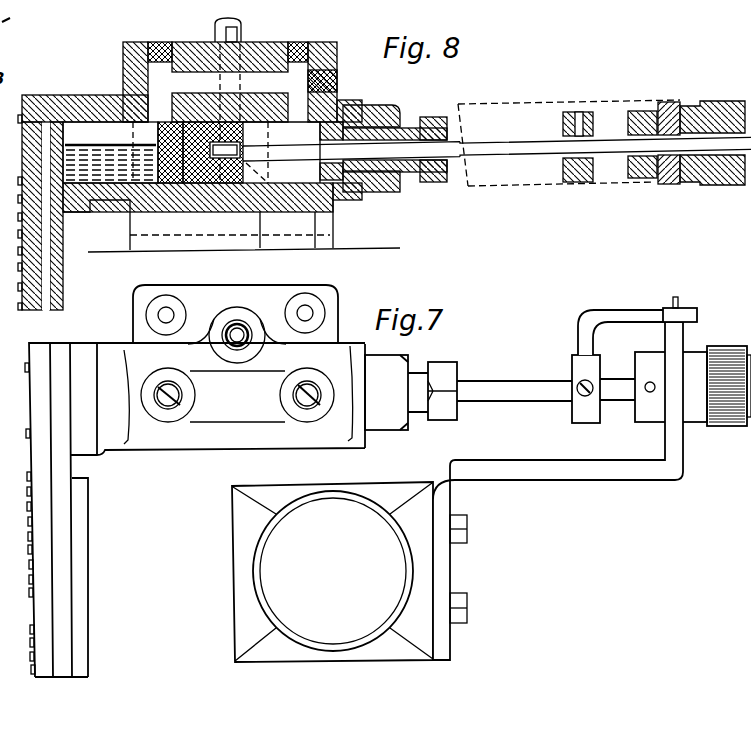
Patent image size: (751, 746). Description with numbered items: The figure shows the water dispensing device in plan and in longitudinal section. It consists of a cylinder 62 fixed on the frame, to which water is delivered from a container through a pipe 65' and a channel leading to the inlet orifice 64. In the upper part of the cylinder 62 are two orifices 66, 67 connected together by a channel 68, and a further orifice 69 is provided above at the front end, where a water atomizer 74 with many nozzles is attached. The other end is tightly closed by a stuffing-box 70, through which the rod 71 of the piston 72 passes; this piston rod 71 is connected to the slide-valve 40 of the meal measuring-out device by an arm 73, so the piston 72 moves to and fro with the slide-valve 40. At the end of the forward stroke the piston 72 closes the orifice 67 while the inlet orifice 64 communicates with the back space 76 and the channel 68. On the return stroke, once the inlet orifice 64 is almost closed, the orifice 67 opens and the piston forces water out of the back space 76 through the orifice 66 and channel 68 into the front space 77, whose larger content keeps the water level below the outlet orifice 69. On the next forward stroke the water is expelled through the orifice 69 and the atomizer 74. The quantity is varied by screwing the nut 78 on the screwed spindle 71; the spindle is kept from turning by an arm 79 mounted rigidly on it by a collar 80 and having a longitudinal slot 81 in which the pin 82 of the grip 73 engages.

In FIG. 7, the slide-valve 40 is at (238, 542).
In FIG. 8, the cylinder 62 is at (333, 205).
In FIG. 8, the inlet orifice 64 is at (261, 176).
In FIG. 8, the pipe 65' is at (248, 29).
In FIG. 8, the orifice 66 is at (306, 104).
In FIG. 8, the orifice 67 is at (158, 100).
In FIG. 8, the channel 68 is at (248, 82).
In FIG. 8, the orifice 69 is at (52, 132).
In FIG. 8, the stuffing-box 70 is at (392, 112).
In FIG. 8, the piston rod 71 is at (462, 155).
In FIG. 7, the piston rod 71 is at (510, 396).
In FIG. 8, the piston 72 is at (168, 172).
In FIG. 7, the arm 73 is at (536, 468).
In FIG. 8, the water atomizer 74 is at (58, 273).
In FIG. 8, the back space 76 is at (290, 170).
In FIG. 8, the front space 77 is at (105, 167).
In FIG. 8, the nut 78 is at (723, 186).
In FIG. 7, the nut 78 is at (723, 427).
In FIG. 7, the arm 79 is at (652, 315).
In FIG. 7, the collar 80 is at (577, 360).
In FIG. 7, the longitudinal slot 81 is at (695, 312).
In FIG. 7, the pin 82 is at (676, 298).